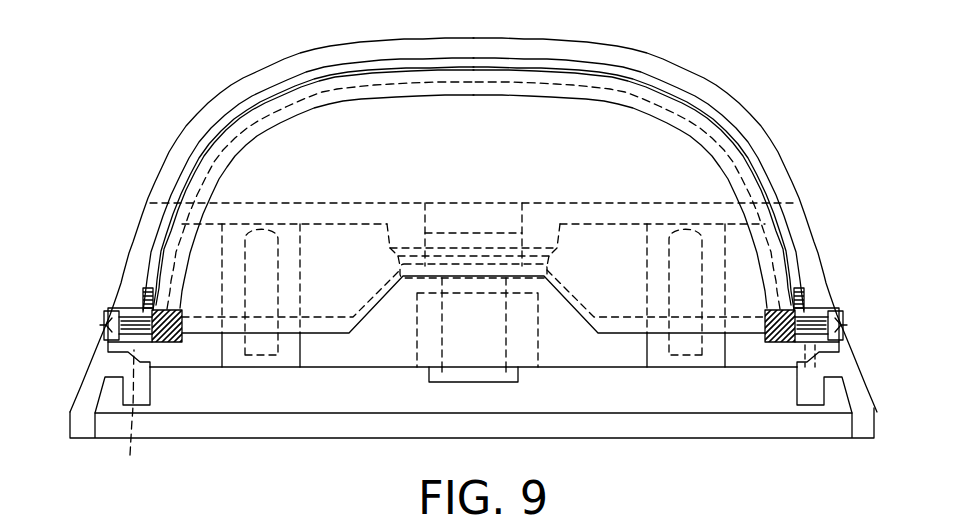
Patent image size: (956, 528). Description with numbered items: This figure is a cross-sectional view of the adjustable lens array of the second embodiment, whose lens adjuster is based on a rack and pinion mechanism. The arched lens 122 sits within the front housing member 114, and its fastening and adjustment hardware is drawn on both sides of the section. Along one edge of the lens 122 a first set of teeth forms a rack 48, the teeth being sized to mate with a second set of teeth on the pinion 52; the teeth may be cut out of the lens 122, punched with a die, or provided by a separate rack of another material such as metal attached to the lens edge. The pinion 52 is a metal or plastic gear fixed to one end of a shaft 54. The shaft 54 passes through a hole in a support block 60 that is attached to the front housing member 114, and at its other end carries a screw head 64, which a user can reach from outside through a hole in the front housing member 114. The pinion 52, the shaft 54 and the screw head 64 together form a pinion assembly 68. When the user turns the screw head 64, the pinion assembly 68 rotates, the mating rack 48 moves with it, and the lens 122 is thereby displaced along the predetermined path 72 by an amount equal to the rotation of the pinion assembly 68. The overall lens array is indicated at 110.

The cover assembly 110 is at (733, 84).
The front housing member 114 is at (246, 84).
The lens 122 is at (162, 174).
The rack 48 is at (146, 286).
The pinion 52 is at (141, 316).
The support block 60 is at (117, 312).
The screw head 64 is at (104, 318).
The shaft 54 is at (98, 350).
The pinion assembly 68 is at (128, 348).
The predetermined path 72 is at (882, 357).